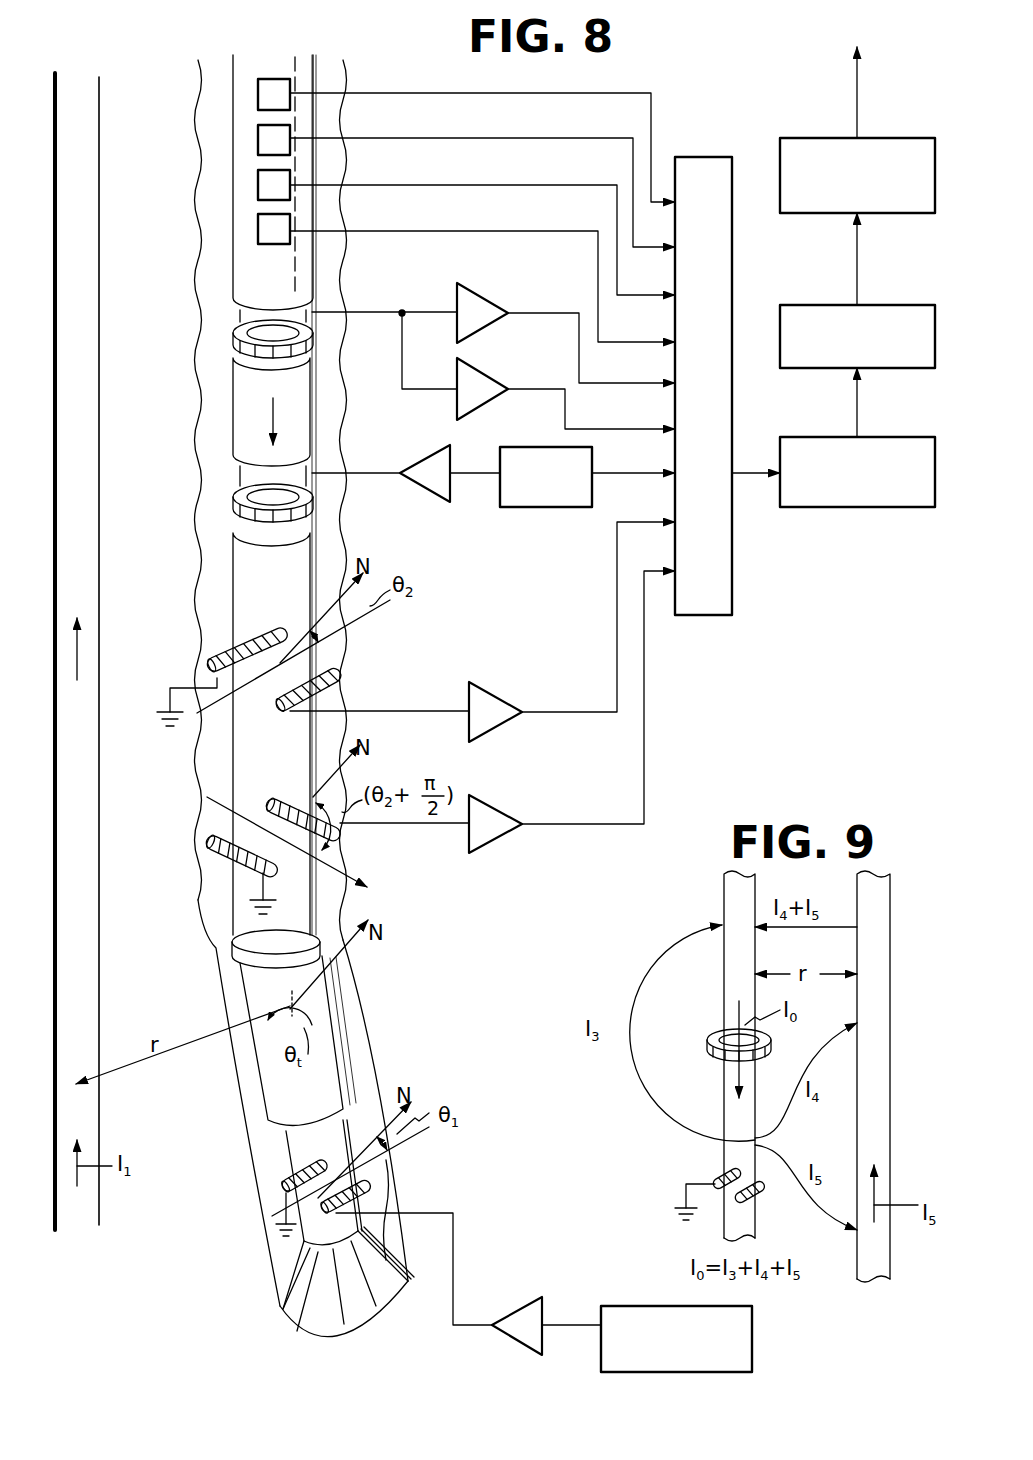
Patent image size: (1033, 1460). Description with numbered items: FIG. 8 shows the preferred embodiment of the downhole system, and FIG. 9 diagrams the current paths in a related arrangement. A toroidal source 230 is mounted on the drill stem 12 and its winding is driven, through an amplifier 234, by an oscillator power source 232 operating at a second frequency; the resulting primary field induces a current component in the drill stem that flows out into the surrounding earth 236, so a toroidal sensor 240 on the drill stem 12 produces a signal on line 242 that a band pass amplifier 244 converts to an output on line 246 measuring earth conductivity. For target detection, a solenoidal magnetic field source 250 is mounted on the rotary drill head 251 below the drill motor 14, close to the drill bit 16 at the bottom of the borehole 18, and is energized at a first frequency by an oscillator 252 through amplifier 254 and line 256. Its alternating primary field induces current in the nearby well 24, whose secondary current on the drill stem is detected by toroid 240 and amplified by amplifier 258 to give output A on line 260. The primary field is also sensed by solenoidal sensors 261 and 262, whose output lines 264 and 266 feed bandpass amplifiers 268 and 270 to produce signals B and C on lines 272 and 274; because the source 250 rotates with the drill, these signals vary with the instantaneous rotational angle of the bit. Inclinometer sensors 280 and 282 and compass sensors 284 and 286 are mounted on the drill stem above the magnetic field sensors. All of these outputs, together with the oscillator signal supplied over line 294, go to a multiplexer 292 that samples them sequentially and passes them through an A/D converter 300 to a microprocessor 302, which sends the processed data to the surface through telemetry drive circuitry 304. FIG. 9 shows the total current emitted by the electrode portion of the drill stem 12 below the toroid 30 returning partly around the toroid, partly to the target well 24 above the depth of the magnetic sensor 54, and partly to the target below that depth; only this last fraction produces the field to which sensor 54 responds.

In FIG. 8, the drill stem 12 is at (232, 408).
In FIG. 9, the drill stem 12 is at (722, 890).
In FIG. 8, the drill motor 14 is at (262, 1088).
In FIG. 8, the drill bit 16 is at (320, 1322).
In FIG. 8, the borehole 18 is at (196, 272).
In FIG. 8, the well 24 is at (102, 996).
In FIG. 9, the well 24 is at (890, 926).
In FIG. 9, the toroid 30 is at (712, 1032).
In FIG. 9, the solenoidal magnetic sensor 54 is at (712, 1170).
In FIG. 8, the toroidal source 230 is at (232, 490).
In FIG. 8, the oscillator power source 232 is at (543, 447).
In FIG. 8, the amplifier 234 is at (422, 456).
In FIG. 8, the surrounding earth 236 is at (166, 328).
In FIG. 8, the toroidal sensor 240 is at (232, 340).
In FIG. 8, the line 242 is at (365, 312).
In FIG. 8, the band pass amplifier 244 is at (488, 293).
In FIG. 8, the line 246 is at (527, 312).
In FIG. 8, the solenoidal magnetic field source 250 is at (276, 1182).
In FIG. 8, the rotary drill head 251 is at (297, 1141).
In FIG. 8, the oscillator 252 is at (638, 1306).
In FIG. 8, the amplifier 254 is at (517, 1345).
In FIG. 8, the line 256 is at (455, 1243).
In FIG. 8, the amplifier 258 is at (477, 370).
In FIG. 8, the line 260 is at (519, 394).
In FIG. 8, the solenoidal sensor 261 is at (215, 640).
In FIG. 8, the solenoidal sensor 262 is at (222, 870).
In FIG. 8, the output line 264 is at (394, 708).
In FIG. 8, the output line 266 is at (418, 826).
In FIG. 8, the bandpass amplifier 268 is at (486, 685).
In FIG. 8, the bandpass amplifier 270 is at (505, 838).
In FIG. 8, the line 272 is at (617, 568).
In FIG. 8, the line 274 is at (617, 702).
In FIG. 8, the inclinometer sensor 280 is at (258, 94).
In FIG. 8, the inclinometer sensor 282 is at (258, 139).
In FIG. 8, the compass sensor 284 is at (258, 185).
In FIG. 8, the compass sensor 286 is at (258, 230).
In FIG. 8, the multiplexer 292 is at (733, 617).
In FIG. 8, the lead 294 is at (612, 473).
In FIG. 8, the A/D converter 300 is at (857, 508).
In FIG. 8, the microprocessor 302 is at (830, 370).
In FIG. 8, the telemetry drive circuitry 304 is at (830, 216).